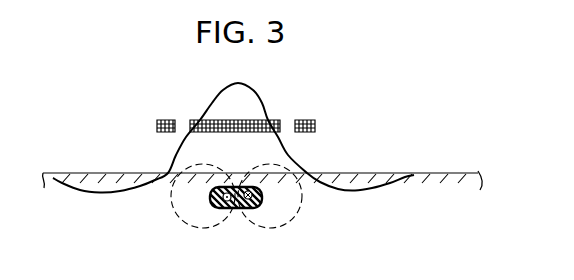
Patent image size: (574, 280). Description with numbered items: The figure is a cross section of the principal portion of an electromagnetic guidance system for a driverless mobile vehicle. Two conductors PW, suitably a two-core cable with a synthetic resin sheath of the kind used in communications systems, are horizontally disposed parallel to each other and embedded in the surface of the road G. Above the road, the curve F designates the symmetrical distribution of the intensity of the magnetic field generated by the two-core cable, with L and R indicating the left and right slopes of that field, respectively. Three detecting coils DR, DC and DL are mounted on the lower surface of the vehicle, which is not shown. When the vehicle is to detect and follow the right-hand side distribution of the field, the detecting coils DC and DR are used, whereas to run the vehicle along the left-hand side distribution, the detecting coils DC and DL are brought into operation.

The symmetrical distribution of magnetic field intensity F is at (214, 103).
The left detecting coil DL is at (156, 126).
The center detecting coil DC is at (232, 132).
The right detecting coil DR is at (316, 126).
The left slope of the magnetic field L is at (167, 173).
The right slope of the magnetic field R is at (307, 173).
The road G is at (430, 173).
The two conductors PW is at (237, 204).